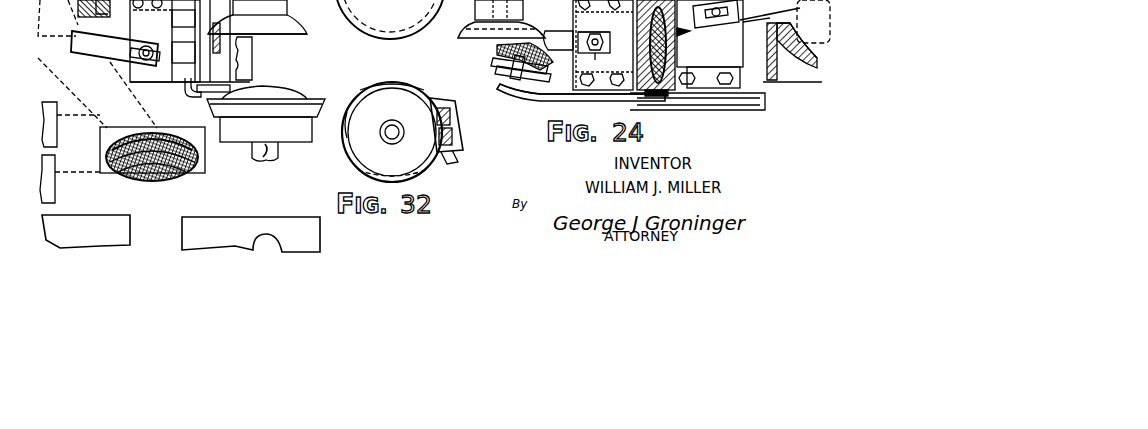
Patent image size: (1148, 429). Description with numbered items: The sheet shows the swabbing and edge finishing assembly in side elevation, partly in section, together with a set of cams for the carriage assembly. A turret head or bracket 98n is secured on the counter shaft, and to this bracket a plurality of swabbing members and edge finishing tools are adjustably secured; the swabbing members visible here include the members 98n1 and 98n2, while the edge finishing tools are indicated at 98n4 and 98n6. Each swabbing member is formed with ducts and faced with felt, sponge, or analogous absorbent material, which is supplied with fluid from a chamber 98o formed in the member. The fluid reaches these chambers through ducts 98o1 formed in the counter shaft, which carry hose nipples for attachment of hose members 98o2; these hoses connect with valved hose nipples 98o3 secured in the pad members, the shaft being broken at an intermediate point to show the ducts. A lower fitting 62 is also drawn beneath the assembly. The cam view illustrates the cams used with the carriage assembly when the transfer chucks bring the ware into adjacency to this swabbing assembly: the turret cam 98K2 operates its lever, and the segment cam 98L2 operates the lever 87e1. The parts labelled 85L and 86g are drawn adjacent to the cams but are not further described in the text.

In FIG. 24, the edge finishing tool 98n6 is at (115, 48).
In FIG. 24, the turret head 98n is at (252, 62).
In FIG. 24, the lower fitting 62 is at (312, 134).
In FIG. 24, the swabbing member 98n1 is at (497, 48).
In FIG. 24, the chamber 98o is at (497, 70).
In FIG. 24, the valved hose nipple 98o3 is at (505, 86).
In FIG. 24, the hose 98o2 is at (545, 100).
In FIG. 24, the edge finishing tool 98n4 is at (597, 30).
In FIG. 24, the duct 98o1 is at (690, 31).
In FIG. 24, the swabbing member 98n2 is at (812, 78).
In FIG. 32, the partial disc 85L is at (382, 20).
In FIG. 32, the segment cam 98L2 is at (389, 80).
In FIG. 32, the turret cam 98K2 is at (386, 170).
In FIG. 32, the lever 87e1 is at (467, 147).
In FIG. 32, the shoe bracket 86g is at (447, 162).